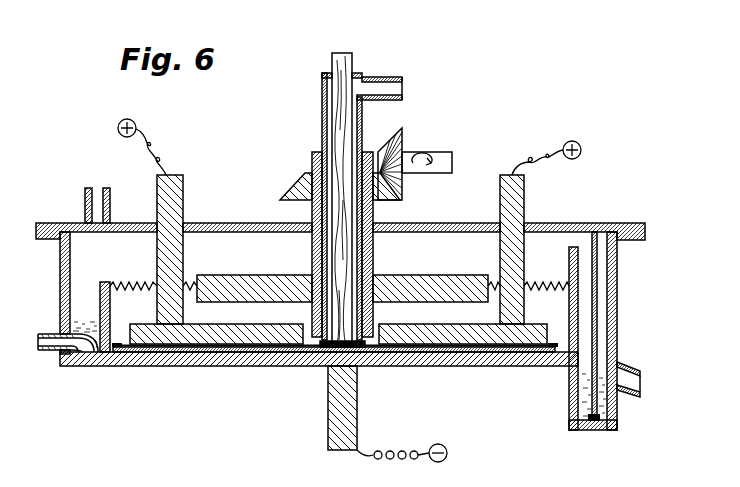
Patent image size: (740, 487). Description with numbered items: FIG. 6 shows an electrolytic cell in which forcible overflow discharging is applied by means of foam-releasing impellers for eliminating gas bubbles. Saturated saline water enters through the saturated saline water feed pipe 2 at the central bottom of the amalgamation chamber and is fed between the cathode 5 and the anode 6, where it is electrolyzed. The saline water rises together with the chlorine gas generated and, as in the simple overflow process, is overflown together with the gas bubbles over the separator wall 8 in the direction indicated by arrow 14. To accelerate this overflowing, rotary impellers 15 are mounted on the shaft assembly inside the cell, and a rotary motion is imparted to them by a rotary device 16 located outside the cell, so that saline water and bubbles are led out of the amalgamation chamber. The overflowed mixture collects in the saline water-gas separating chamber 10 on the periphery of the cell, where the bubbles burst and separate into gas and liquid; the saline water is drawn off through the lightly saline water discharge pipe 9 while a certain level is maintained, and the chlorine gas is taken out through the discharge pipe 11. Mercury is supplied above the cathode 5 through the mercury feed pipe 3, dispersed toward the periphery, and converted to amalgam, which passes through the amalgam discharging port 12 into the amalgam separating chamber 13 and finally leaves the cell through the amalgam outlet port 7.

The saturated saline water feed pipe 2 is at (384, 80).
The mercury feed pipe 3 is at (352, 67).
The cathode 5 is at (243, 358).
The anode 6 is at (193, 338).
The amalgam outlet port 7 is at (640, 382).
The separator wall 8 is at (112, 328).
The lightly saline water discharge pipe 9 is at (40, 337).
The saline water-gas separating chamber 10 is at (70, 312).
The discharge pipe 11 is at (88, 205).
The amalgam discharging port 12 is at (581, 352).
The amalgam separating chamber 13 is at (594, 423).
The arrow 14 is at (88, 292).
The rotary impellers 15 is at (230, 275).
The rotary device 16 is at (400, 182).